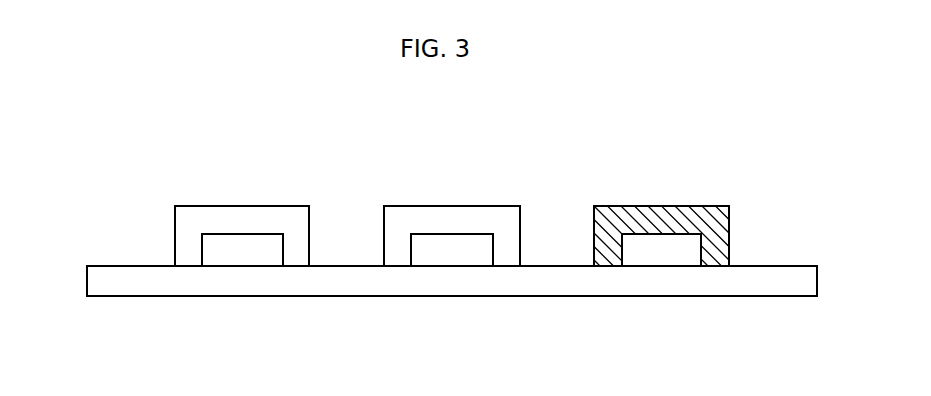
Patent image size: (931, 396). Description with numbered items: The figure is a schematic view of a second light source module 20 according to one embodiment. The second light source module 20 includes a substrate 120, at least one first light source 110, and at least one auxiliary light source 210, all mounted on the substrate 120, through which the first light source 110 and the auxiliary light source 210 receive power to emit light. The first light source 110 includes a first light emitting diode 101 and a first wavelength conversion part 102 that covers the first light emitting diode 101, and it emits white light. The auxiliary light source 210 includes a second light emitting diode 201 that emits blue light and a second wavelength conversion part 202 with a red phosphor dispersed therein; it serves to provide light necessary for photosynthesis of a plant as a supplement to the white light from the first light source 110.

The second light source module 20 is at (54, 109).
The substrate 120 is at (151, 289).
The first light source 110 is at (218, 150).
The first light emitting diode 101 is at (225, 241).
The first wavelength conversion part 102 is at (280, 216).
The auxiliary light source 210 is at (638, 150).
The second light emitting diode 201 is at (643, 240).
The second wavelength conversion part 202 is at (699, 216).